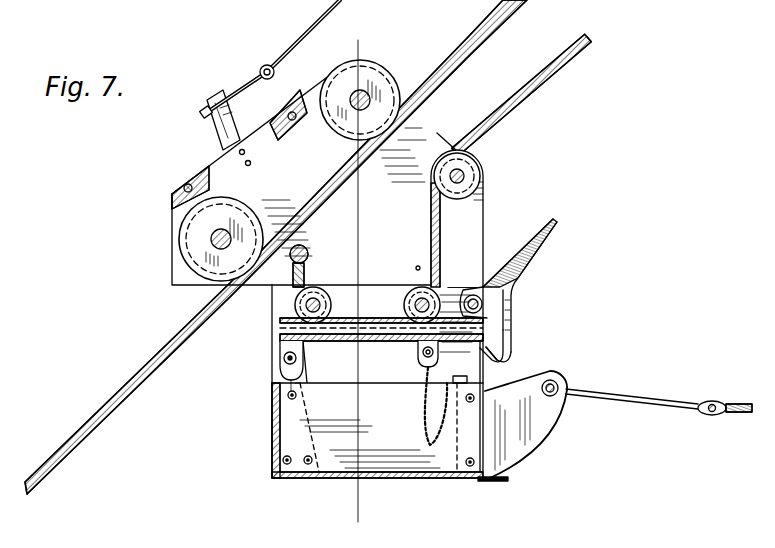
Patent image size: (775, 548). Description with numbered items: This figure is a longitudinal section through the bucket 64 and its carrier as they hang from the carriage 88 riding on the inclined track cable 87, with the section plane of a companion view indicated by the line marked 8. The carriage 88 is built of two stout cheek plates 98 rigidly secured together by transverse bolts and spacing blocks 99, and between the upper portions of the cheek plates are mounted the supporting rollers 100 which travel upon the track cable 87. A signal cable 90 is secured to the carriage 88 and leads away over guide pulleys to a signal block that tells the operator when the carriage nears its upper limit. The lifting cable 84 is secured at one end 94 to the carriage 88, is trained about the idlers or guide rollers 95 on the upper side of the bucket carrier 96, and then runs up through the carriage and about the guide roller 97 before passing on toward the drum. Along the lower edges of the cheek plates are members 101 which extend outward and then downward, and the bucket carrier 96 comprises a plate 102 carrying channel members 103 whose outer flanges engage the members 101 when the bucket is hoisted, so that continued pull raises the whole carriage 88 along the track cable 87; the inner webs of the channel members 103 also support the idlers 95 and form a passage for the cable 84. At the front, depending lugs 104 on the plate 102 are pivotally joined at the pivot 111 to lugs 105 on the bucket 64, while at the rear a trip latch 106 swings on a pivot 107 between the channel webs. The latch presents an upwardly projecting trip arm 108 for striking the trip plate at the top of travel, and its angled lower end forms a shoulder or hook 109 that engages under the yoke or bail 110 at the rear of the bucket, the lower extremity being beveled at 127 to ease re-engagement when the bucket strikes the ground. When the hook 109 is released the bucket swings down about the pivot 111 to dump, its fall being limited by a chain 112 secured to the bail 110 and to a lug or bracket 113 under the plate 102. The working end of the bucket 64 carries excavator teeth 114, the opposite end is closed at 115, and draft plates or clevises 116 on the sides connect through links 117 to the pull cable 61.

The section line 8- 8 is at (353, 44).
The pull cable 61 is at (740, 415).
The bucket 64 is at (318, 480).
The lifting cable 84 is at (520, 100).
The track cable 87 is at (113, 408).
The carriage 88 is at (228, 168).
The signal cable 90 is at (293, 43).
The cable end 94 is at (305, 250).
The idlers or guide rollers 95 is at (418, 285).
The bucket carrier 96 is at (373, 335).
The guide roller 97 is at (468, 175).
The cheek plates 98 is at (425, 143).
The transverse bolts and spacing blocks 99 is at (172, 192).
The supporting rollers 100 is at (377, 77).
The members 101 is at (282, 295).
The plate 102 is at (500, 326).
The channel members 103 is at (470, 300).
The depending lugs 104 is at (280, 350).
The lugs 105 is at (283, 377).
The trip latch 106 is at (490, 293).
The pivot 107 is at (478, 308).
The trip arm 108 is at (538, 255).
The shoulder or hook 109 is at (492, 363).
The yoke or bail 110 is at (470, 380).
The pivot 111 is at (283, 360).
The chain or flexible stop device 112 is at (422, 382).
The lug or bracket 113 is at (418, 352).
The excavator teeth 114 is at (500, 482).
The closed end 115 is at (272, 438).
The draft plates or clevises 116 is at (545, 437).
The links 117 is at (663, 397).
The beveled lower extremity 127 is at (492, 343).